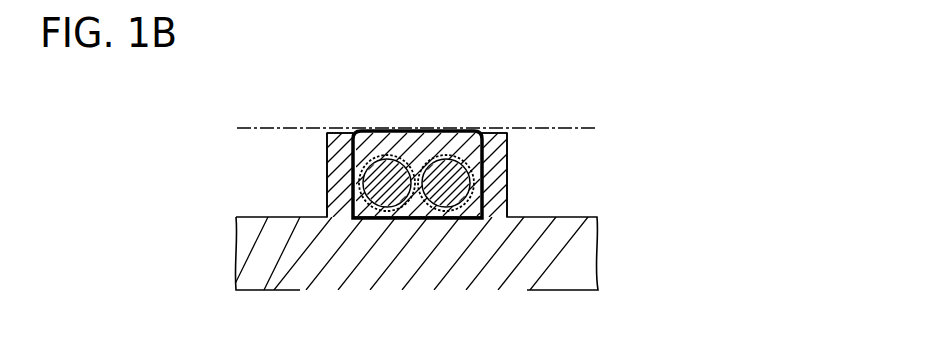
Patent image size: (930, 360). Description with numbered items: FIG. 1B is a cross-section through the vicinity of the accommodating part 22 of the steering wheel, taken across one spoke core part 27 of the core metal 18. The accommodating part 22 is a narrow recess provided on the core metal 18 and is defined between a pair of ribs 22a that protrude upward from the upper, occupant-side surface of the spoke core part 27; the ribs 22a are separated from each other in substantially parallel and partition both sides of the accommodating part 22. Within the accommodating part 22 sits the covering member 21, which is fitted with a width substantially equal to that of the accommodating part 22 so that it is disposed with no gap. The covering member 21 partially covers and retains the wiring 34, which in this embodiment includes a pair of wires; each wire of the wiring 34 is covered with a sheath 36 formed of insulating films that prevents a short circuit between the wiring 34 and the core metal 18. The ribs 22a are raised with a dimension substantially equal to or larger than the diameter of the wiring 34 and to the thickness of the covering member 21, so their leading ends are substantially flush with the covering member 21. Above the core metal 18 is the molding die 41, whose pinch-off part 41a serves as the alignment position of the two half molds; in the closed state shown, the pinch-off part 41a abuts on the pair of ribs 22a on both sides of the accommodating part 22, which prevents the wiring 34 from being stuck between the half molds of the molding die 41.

The core metal 18 is at (420, 239).
The spoke core part 27 is at (545, 280).
The covering member 21 is at (418, 139).
The accommodating part 22 is at (432, 218).
The ribs 22a is at (492, 132).
The wiring 34 is at (428, 203).
The sheath 36 is at (488, 188).
The molding die 41 is at (264, 129).
The pinch-off part 41a is at (575, 128).